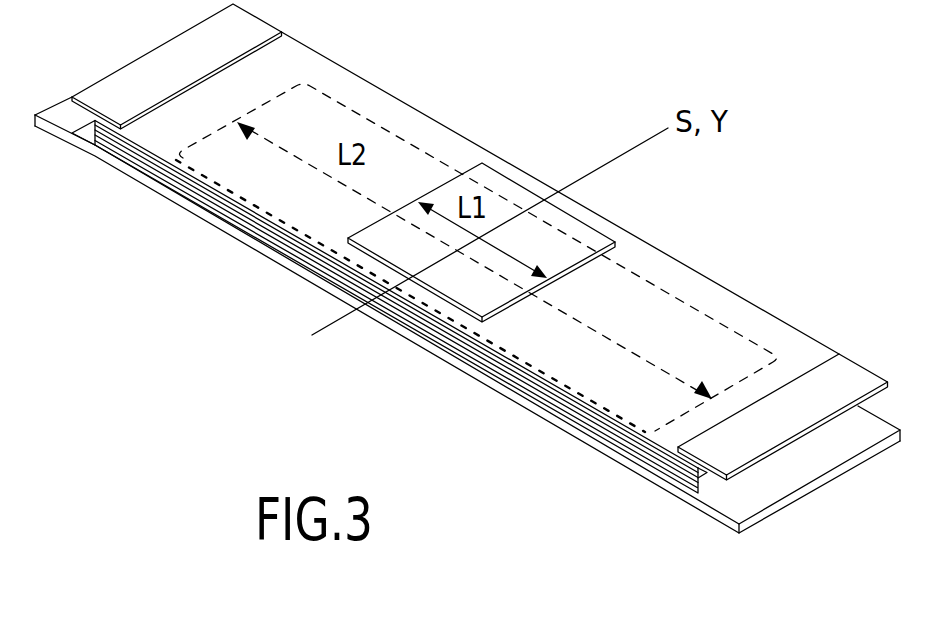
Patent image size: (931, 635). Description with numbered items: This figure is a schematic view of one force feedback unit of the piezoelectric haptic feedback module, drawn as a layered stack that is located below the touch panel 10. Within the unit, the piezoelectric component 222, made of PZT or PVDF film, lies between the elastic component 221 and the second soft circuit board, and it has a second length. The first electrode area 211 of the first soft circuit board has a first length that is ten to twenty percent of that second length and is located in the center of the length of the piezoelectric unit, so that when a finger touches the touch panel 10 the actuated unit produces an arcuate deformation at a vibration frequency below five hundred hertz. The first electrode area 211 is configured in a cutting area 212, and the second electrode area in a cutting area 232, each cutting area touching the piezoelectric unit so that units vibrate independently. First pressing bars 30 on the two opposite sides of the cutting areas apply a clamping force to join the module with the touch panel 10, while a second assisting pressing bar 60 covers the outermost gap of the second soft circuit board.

The touch panel 10 is at (752, 512).
The first pressing bar 30 is at (147, 78).
The second assisting pressing bar 60 is at (97, 122).
The first electrode area 211 is at (458, 277).
The cutting area 212 is at (683, 433).
The elastic component 221 is at (220, 203).
The piezoelectric component 222 is at (318, 203).
The cutting area 232 is at (153, 168).